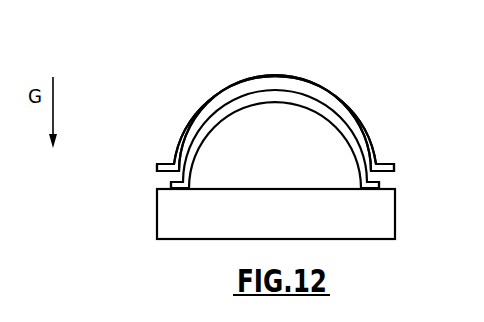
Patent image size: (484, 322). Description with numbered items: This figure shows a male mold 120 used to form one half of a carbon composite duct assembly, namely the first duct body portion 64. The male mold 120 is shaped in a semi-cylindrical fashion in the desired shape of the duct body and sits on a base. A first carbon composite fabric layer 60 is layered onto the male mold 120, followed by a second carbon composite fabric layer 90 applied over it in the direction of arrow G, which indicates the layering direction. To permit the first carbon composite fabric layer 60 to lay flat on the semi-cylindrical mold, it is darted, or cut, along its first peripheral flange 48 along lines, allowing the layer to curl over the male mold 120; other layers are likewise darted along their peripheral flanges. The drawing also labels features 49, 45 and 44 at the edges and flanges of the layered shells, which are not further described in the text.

The male mold 120 is at (300, 173).
The first duct body portion 64 is at (275, 116).
The outer shell 49 is at (361, 115).
The second carbon composite fabric layer 90 is at (229, 86).
The outer shell flange 45 is at (158, 166).
The first carbon composite fabric layer 60 is at (208, 118).
The first peripheral flange 48 is at (295, 99).
The inner shell foot 44 is at (172, 183).